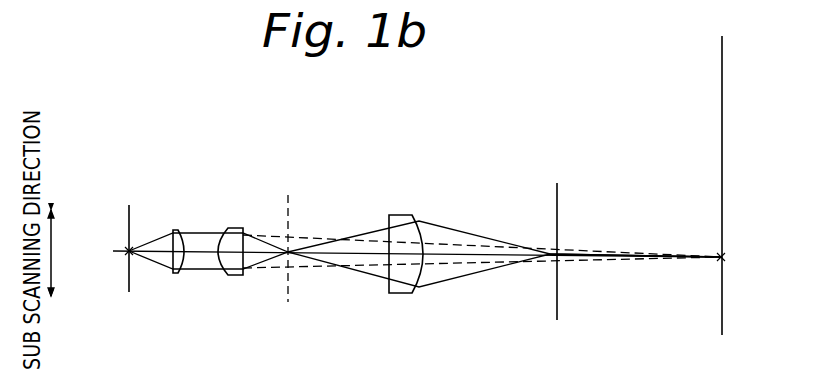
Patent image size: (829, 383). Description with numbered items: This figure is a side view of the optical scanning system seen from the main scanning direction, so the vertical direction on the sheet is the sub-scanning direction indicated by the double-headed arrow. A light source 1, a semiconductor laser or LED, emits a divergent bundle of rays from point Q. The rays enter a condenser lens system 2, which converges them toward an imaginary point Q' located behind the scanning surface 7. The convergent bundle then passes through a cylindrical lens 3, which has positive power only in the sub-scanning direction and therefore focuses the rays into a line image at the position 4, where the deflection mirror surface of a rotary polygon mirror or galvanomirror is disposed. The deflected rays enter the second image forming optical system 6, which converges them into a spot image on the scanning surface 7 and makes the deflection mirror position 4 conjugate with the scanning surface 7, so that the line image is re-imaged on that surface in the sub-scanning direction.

The light source 1 is at (131, 229).
The condenser lens system 2 is at (175, 232).
The cylindrical lens 3 is at (230, 229).
The deflection mirror surface 4 is at (292, 213).
The second image forming optical system 6 is at (412, 216).
The scanning surface 7 is at (559, 198).